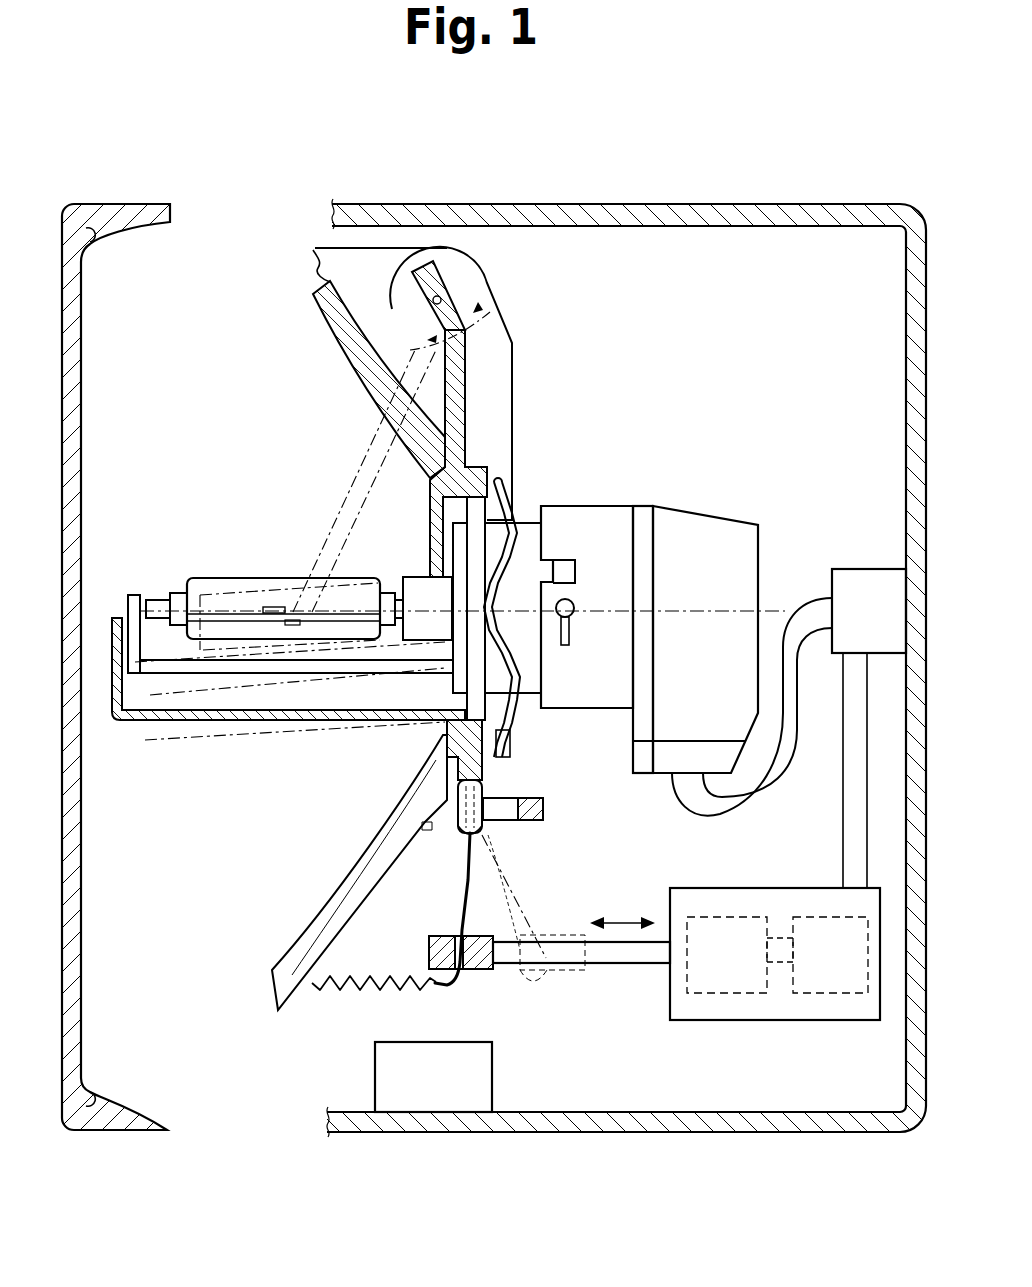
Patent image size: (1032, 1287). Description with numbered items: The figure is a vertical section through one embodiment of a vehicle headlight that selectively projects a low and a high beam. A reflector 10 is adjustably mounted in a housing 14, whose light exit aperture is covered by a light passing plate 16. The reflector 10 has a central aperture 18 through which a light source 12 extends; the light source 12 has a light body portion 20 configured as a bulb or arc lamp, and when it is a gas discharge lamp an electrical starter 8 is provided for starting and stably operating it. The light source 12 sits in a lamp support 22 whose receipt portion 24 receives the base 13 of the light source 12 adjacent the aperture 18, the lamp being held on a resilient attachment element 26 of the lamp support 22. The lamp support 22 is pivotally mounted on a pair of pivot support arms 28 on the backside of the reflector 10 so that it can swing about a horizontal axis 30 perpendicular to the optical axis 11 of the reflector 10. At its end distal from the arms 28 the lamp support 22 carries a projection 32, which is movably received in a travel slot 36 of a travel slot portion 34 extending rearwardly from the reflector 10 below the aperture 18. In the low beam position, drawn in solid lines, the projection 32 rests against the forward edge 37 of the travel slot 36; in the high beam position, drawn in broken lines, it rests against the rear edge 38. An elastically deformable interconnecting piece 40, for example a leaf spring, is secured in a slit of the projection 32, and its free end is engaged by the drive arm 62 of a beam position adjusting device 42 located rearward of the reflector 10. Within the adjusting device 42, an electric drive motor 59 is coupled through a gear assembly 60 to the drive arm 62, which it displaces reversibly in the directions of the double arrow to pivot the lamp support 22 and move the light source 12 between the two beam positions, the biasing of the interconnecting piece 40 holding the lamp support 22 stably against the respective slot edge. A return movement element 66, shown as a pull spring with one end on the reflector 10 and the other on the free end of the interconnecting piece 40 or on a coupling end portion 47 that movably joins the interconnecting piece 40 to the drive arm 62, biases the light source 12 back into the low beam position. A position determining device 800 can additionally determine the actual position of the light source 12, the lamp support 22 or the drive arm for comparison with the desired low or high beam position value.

The electrical starter 8 is at (877, 623).
The reflector 10 is at (330, 300).
The optical axis 11 is at (781, 611).
The light source 12 is at (537, 484).
The base 13 is at (493, 480).
The housing 14 is at (798, 215).
The light passing plate 16 is at (82, 330).
The aperture 18 is at (437, 497).
The light body portion 20 is at (271, 606).
The lamp support 22 is at (457, 373).
The receipt portion 24 is at (464, 466).
The resilient attachment element 26 is at (512, 542).
The pivot support arms 28 is at (398, 265).
The horizontal axis 30 is at (438, 297).
The projection 32 is at (480, 835).
The travel slot portion 34 is at (537, 805).
The travel slot 36 is at (484, 805).
The forward edge 37 is at (458, 836).
The rear edge 38 is at (522, 830).
The interconnecting piece 40 is at (469, 903).
The beam position adjusting device 42 is at (675, 871).
The coupling end portion 47 is at (483, 960).
The electric drive motor 59 is at (826, 982).
The gear assembly 60 is at (711, 982).
The drive arm 62 is at (628, 964).
The return movement element 66 is at (362, 988).
The position determining device 800 is at (412, 1094).